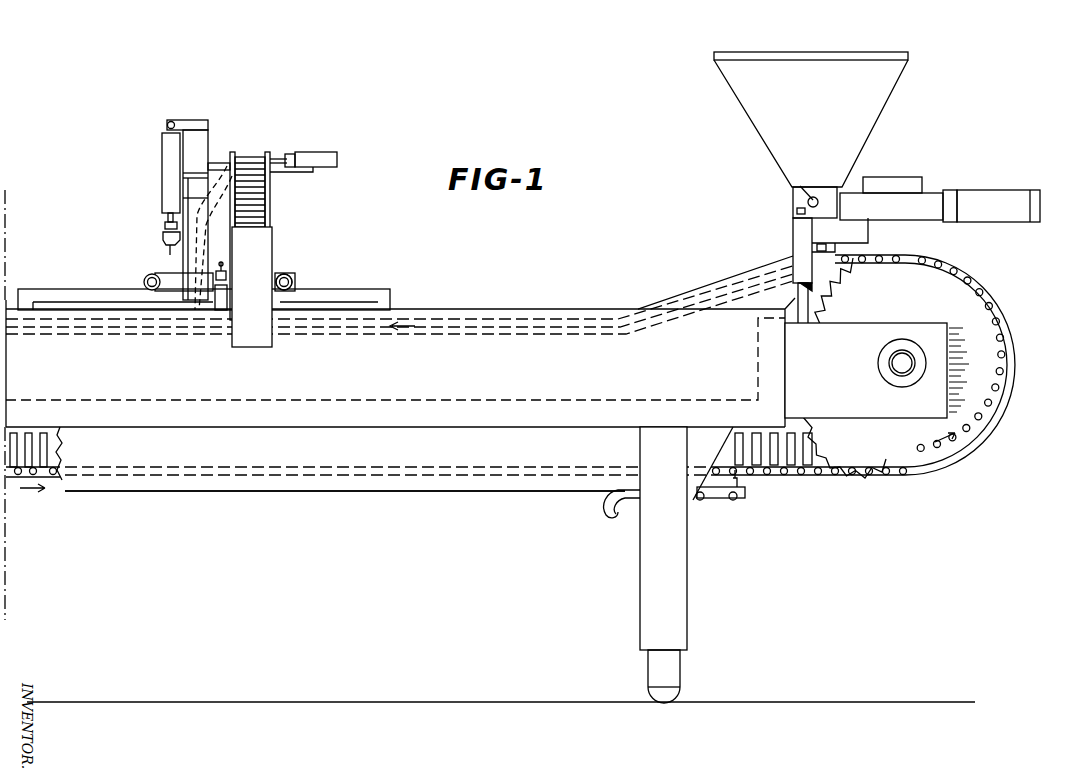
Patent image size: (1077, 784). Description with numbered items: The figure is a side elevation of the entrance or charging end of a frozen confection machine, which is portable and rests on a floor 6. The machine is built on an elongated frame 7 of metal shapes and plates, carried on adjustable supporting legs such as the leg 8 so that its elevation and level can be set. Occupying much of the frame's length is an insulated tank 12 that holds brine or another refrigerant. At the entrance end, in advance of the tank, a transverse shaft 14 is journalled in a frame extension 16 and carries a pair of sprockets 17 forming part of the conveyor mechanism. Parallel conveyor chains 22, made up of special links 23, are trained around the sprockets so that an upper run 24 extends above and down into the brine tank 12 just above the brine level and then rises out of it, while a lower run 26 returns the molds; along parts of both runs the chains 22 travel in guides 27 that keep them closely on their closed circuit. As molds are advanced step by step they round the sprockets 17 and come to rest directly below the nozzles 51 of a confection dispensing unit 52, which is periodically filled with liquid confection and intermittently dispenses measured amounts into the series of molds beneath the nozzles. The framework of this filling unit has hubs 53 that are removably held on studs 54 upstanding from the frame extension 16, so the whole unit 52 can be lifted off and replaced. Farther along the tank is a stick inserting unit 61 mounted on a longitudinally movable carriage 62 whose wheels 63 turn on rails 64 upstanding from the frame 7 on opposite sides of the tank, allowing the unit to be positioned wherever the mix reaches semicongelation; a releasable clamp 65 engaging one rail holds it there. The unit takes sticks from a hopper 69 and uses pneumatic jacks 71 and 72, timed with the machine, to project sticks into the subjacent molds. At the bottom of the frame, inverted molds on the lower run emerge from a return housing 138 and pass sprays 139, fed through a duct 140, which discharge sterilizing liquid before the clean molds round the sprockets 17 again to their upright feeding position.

The floor 6 is at (230, 700).
The frame 7 is at (466, 380).
The supporting leg 8 is at (640, 603).
The insulated tank 12 is at (343, 440).
The transverse shaft 14 is at (909, 347).
The frame extension 16 is at (880, 322).
The sprockets 17 is at (885, 448).
The conveyor chains 22 is at (896, 253).
The links 23 is at (985, 301).
The upper run 24 is at (552, 322).
The lower run 26 is at (61, 496).
The guides 27 is at (758, 282).
The nozzles 51 is at (822, 248).
The confection dispensing unit 52 is at (872, 120).
The hubs 53 is at (792, 232).
The studs 54 is at (1000, 182).
The stick inserting unit 61 is at (240, 130).
The carriage 62 is at (291, 277).
The wheels 63 is at (148, 278).
The rails 64 is at (380, 292).
The releasable clamp 65 is at (220, 312).
The hopper 69 is at (260, 255).
The pneumatic jack 71 is at (301, 158).
The pneumatic jack 72 is at (162, 179).
The return housing 138 is at (496, 486).
The sprays 139 is at (744, 488).
The duct 140 is at (612, 518).